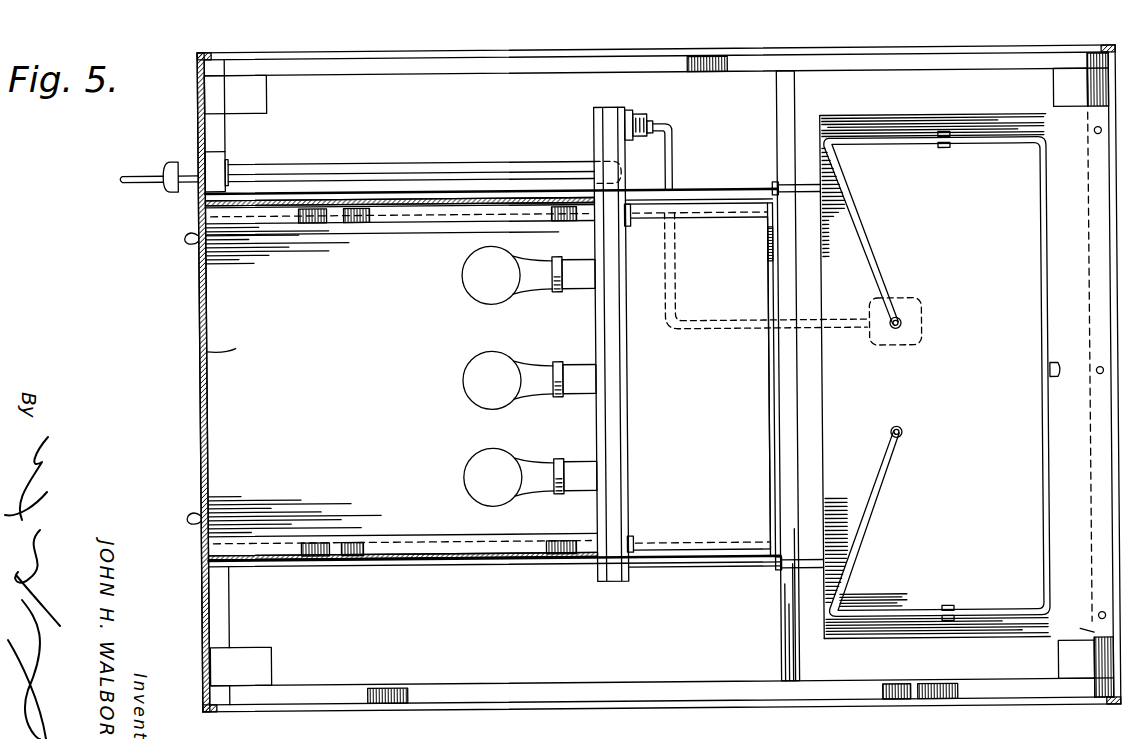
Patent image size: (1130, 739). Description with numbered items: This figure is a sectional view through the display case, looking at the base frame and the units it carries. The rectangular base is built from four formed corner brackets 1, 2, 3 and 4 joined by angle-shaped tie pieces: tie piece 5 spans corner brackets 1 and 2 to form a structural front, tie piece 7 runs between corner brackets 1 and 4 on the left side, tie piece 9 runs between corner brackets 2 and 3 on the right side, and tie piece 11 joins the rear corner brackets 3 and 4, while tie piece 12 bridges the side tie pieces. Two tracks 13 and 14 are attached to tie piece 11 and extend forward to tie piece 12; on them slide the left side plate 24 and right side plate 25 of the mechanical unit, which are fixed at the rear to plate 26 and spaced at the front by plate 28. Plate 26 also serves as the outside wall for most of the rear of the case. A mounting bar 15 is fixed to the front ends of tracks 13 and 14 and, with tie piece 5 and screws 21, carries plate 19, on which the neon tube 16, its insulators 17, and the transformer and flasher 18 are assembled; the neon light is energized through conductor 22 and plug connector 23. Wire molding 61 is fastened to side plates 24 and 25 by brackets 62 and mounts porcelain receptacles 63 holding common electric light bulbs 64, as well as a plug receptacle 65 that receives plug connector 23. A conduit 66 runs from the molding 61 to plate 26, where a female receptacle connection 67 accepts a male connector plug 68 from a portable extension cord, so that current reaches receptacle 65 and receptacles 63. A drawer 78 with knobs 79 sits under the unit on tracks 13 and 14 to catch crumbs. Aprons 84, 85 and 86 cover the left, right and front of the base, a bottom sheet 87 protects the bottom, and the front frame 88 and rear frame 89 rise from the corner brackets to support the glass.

The corner bracket 1 is at (1056, 660).
The corner bracket 2 is at (1056, 95).
The corner bracket 3 is at (270, 110).
The corner bracket 4 is at (270, 660).
The tie piece 5 is at (1094, 82).
The tie piece 7 is at (678, 701).
The tie piece 9 is at (505, 73).
The tie piece 11 is at (230, 137).
The tie piece 12 is at (800, 110).
The track 13 is at (437, 540).
The track 14 is at (343, 220).
The mounting bar 15 is at (803, 184).
The neon tube 16 is at (866, 223).
The insulator 17 is at (946, 141).
The transformer and flasher 18 is at (924, 325).
The plate 19 is at (982, 632).
The screw 21 is at (1060, 370).
The conductor 22 is at (676, 161).
The plug connector 23 is at (656, 121).
The left side plate 24 is at (478, 566).
The right side plate 25 is at (459, 203).
The plate 26 is at (206, 104).
The plate 28 is at (770, 270).
The wire molding 61 is at (629, 343).
The bracket 62 is at (629, 226).
The porcelain receptacle 63 is at (578, 292).
The electric light bulb 64 is at (490, 250).
The plug receptacle 65 is at (640, 112).
The conduit 66 is at (516, 166).
The female receptacle connection 67 is at (204, 186).
The male connector plug 68 is at (181, 162).
The drawer 78 is at (233, 354).
The knob 79 is at (186, 240).
The apron 84 is at (523, 708).
The apron 85 is at (645, 55).
The apron 86 is at (1090, 271).
The bottom sheet 87 is at (557, 81).
The front frame 88 is at (1098, 49).
The rear frame 89 is at (214, 57).